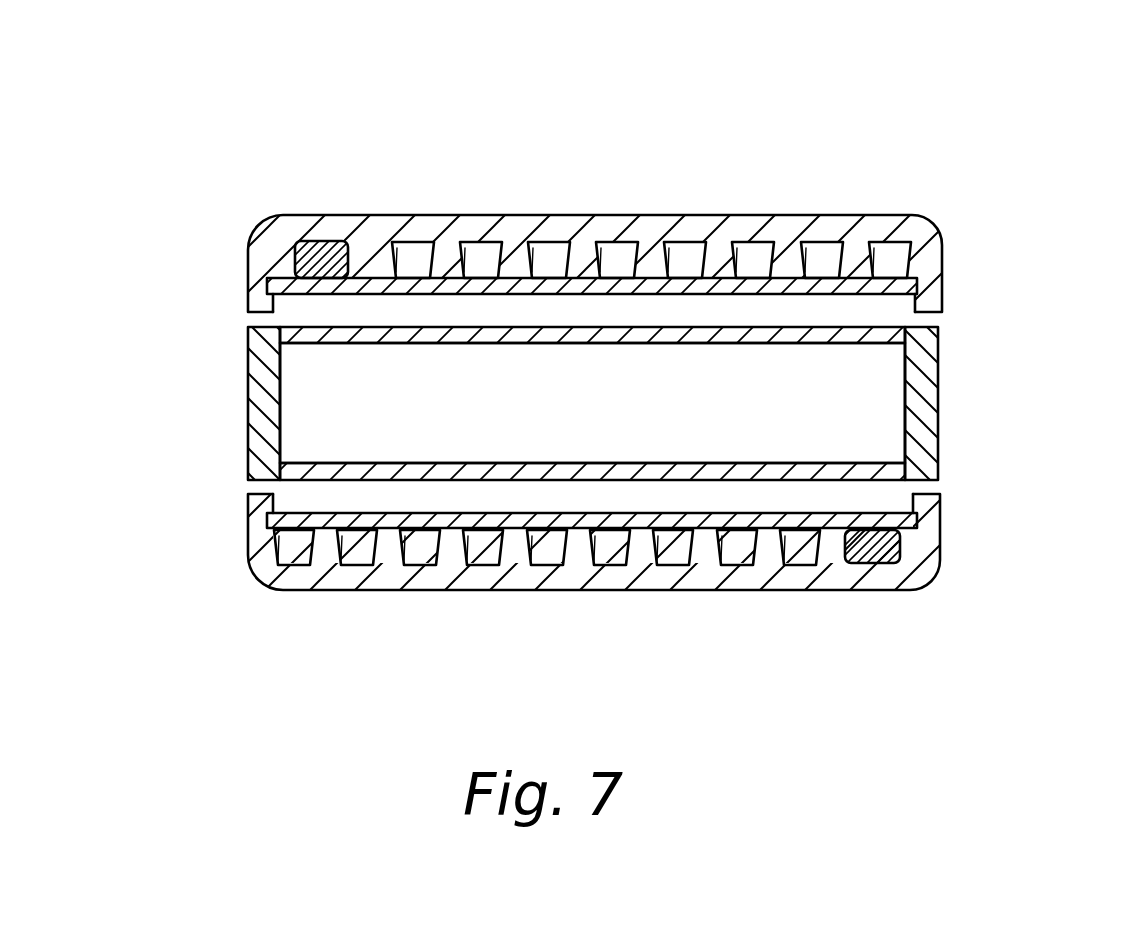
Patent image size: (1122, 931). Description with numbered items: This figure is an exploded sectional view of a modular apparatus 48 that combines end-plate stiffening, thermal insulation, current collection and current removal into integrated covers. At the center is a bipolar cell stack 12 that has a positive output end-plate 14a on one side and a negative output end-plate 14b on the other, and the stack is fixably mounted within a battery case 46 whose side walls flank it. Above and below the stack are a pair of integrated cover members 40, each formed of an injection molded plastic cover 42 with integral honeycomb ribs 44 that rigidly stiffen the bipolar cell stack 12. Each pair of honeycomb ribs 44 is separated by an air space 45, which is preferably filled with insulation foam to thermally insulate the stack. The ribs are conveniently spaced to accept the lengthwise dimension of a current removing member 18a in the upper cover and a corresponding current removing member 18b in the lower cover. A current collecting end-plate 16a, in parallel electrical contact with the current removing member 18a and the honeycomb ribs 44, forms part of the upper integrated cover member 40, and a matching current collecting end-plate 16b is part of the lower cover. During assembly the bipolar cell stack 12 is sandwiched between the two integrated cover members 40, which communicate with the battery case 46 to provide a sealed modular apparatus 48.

The bipolar cell stack 12 is at (875, 383).
The positive output end-plate 14a is at (577, 333).
The negative output end-plate 14b is at (594, 480).
The current collecting end-plate 16a is at (512, 266).
The current collecting end-plate 16b is at (425, 530).
The current removing member 18a is at (292, 216).
The current removing member 18b is at (893, 546).
The integrated cover member 40 is at (937, 224).
The injection molded plastic cover 42 is at (767, 226).
The honeycomb ribs 44 is at (446, 257).
The air space 45 is at (697, 255).
The battery case 46 is at (260, 409).
The modular apparatus 48 is at (243, 160).